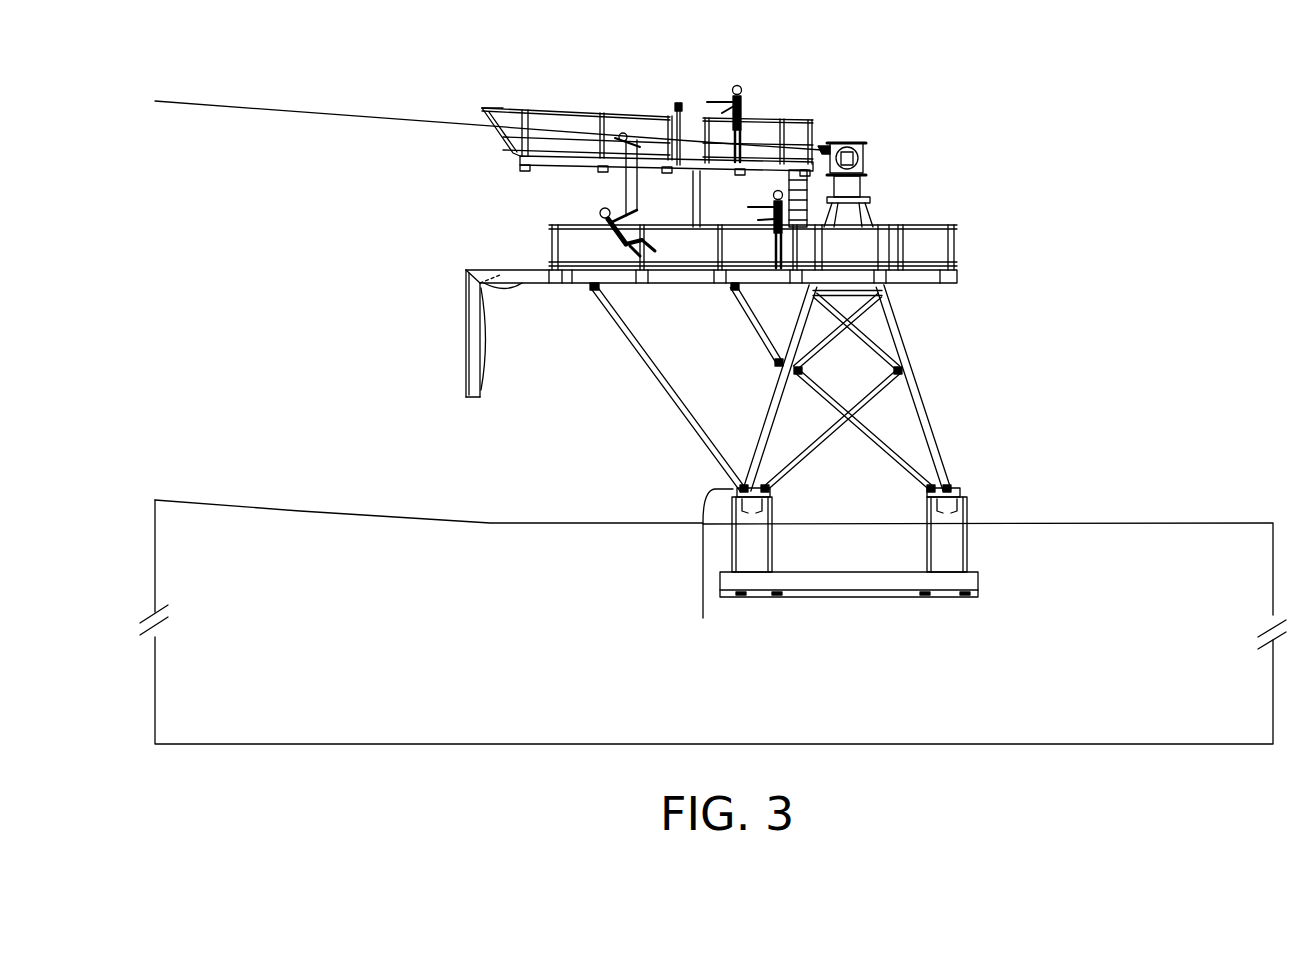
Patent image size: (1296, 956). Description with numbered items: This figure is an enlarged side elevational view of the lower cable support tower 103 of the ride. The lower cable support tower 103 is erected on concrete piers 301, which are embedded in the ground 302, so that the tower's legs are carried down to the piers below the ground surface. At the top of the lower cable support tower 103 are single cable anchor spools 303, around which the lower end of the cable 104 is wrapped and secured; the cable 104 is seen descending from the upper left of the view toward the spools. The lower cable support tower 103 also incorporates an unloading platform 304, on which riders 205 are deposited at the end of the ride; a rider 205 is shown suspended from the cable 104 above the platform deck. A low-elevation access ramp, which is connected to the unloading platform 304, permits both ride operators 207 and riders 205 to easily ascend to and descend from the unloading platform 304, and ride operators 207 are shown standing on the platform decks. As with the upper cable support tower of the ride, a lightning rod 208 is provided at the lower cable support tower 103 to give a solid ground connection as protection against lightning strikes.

The cable 104 is at (352, 104).
The ride operators 207 is at (764, 180).
The single cable anchor spools 303 is at (852, 158).
The riders 205 is at (581, 208).
The unloading platform 304 is at (507, 278).
The lower cable support tower 103 is at (913, 386).
The concrete piers 301 is at (943, 552).
The ground 302 is at (1010, 556).
The lightning rod 208 is at (694, 553).